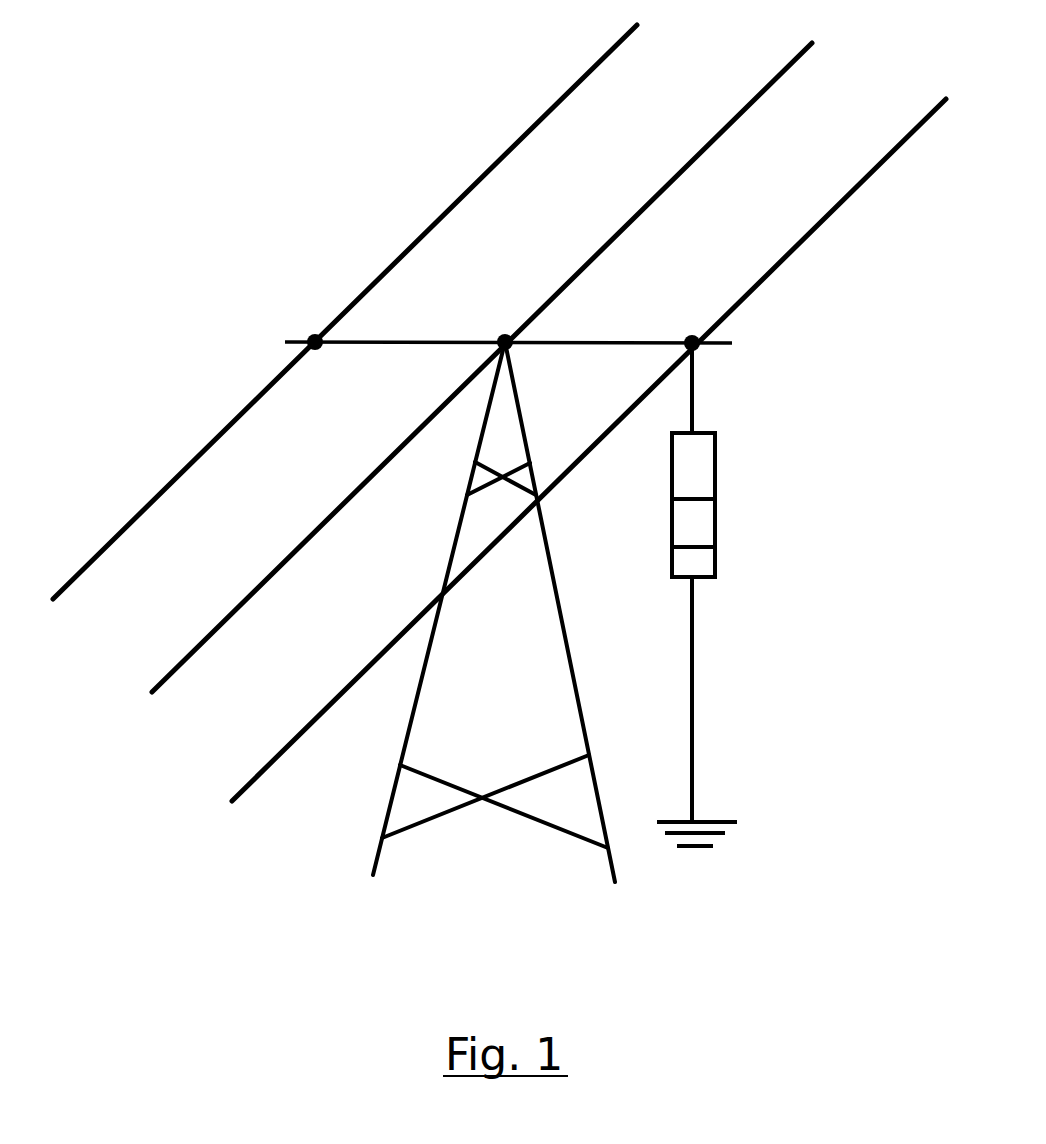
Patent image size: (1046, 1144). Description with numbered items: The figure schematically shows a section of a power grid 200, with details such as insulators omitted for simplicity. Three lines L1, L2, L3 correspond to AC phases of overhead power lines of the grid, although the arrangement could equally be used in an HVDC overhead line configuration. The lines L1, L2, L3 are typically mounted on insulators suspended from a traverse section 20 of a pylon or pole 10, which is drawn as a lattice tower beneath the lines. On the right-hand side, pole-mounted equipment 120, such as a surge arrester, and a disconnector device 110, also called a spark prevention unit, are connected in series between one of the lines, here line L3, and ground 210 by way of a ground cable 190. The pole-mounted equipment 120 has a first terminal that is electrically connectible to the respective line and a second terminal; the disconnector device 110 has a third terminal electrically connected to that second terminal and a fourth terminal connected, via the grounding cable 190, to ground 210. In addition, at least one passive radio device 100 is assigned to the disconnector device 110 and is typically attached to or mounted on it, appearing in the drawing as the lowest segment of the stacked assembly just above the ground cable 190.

The power grid 200 is at (486, 127).
The line L1 is at (432, 227).
The line L2 is at (600, 250).
The line L3 is at (762, 283).
The traverse section 20 is at (444, 342).
The pylon or pole 10 is at (382, 853).
The ground cable 190 is at (693, 677).
The pole-mounted equipment 120 is at (712, 473).
The disconnector device 110 is at (710, 522).
The passive radio device 100 is at (708, 563).
The ground 210 is at (725, 833).